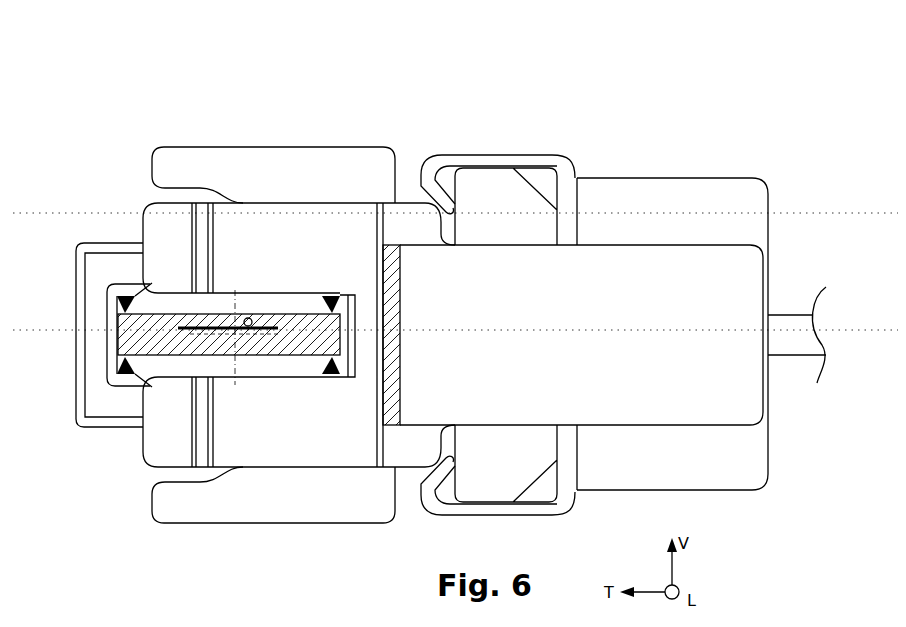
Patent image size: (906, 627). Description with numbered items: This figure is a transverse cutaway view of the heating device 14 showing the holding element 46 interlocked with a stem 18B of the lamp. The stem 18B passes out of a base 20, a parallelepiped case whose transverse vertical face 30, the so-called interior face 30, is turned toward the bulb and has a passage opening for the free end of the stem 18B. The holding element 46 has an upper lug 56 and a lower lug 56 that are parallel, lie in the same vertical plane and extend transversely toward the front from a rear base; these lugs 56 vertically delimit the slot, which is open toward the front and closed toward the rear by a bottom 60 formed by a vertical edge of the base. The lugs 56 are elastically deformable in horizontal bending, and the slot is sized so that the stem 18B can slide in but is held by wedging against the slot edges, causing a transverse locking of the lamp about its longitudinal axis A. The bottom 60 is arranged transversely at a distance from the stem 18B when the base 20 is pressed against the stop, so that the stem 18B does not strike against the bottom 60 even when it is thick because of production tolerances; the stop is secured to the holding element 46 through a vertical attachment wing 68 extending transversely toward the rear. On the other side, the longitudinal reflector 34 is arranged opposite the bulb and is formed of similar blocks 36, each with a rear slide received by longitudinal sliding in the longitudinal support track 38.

The heating device 14 is at (327, 116).
The stem 18B is at (147, 341).
The base 20 is at (102, 266).
The transverse vertical face 30 is at (97, 330).
The longitudinal reflector 34 is at (529, 143).
The block 36 is at (522, 206).
The longitudinal support track 38 is at (468, 162).
The holding element 46 is at (290, 182).
The lug 56 is at (256, 228).
The bottom 60 is at (338, 372).
The vertical attachment wing 68 is at (738, 305).
The pivot axis A is at (233, 333).